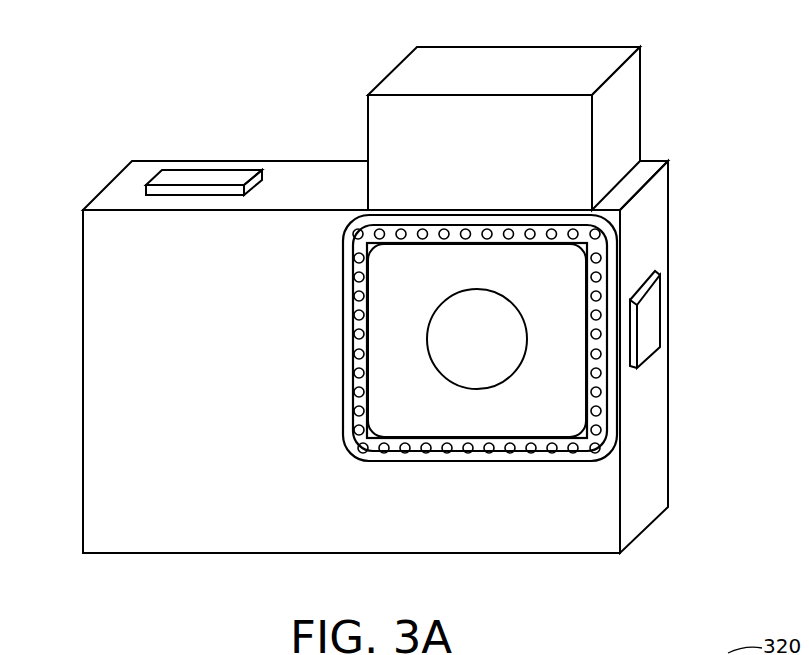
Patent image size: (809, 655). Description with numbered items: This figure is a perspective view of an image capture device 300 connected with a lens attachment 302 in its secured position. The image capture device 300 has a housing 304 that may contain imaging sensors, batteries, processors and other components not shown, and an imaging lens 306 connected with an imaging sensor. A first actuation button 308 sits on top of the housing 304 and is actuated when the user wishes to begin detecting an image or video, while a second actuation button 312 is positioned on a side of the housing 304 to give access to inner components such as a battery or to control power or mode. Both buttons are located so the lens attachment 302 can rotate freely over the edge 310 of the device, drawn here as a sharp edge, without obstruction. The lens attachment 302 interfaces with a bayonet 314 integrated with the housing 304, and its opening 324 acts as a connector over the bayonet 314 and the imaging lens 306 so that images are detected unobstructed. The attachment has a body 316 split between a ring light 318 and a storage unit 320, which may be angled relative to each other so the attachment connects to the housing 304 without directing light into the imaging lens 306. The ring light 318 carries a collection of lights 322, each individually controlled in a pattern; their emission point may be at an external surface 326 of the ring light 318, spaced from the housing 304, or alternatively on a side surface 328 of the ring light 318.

The image capture device 300 is at (413, 281).
The lens attachment 302 is at (432, 303).
The housing 304 is at (302, 147).
The imaging lens 306 is at (512, 373).
The first actuation button 308 is at (193, 168).
The edge 310 is at (645, 184).
The second actuation button 312 is at (657, 272).
The bayonet 314 is at (372, 433).
The body 316 is at (654, 88).
The ring light 318 is at (343, 257).
The storage unit 320 is at (547, 109).
The collection of lights 322 is at (350, 315).
The opening 324 is at (588, 432).
The external surface 326 is at (442, 453).
The side surface 328 is at (615, 417).